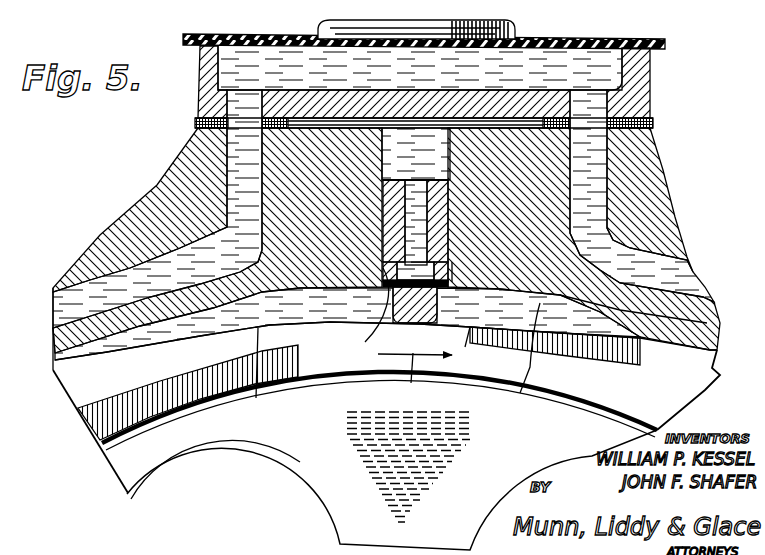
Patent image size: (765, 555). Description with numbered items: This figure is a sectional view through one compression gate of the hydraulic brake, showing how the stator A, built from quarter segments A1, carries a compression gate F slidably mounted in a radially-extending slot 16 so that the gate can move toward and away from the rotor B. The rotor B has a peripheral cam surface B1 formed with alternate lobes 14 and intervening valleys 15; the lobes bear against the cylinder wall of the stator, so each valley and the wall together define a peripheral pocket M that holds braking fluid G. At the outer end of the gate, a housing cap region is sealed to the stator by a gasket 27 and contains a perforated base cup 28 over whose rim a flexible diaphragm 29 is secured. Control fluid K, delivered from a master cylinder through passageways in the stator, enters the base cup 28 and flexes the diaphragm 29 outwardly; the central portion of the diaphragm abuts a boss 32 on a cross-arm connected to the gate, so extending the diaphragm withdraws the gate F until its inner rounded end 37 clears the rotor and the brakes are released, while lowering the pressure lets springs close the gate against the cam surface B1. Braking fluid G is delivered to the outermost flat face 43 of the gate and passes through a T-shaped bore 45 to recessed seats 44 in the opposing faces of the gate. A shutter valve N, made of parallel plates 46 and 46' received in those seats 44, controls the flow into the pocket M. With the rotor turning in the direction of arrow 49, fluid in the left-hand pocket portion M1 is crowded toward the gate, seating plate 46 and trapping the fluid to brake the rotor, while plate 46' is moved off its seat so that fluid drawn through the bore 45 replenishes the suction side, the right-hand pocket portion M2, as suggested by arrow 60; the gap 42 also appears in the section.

The flexible diaphragm 29 is at (668, 42).
The boss 32 is at (324, 30).
The control fluid K is at (214, 75).
The quarter segment A1 is at (186, 156).
The perforated base cup 28 is at (642, 103).
The gasket 27 is at (652, 127).
The gap 42 is at (440, 133).
The stator A is at (140, 187).
The pocket M is at (132, 232).
The radially-extending slot 16 is at (416, 154).
The T-shaped bore 45 is at (386, 214).
The outermost flat face 43 is at (388, 182).
The compression gate F is at (438, 230).
The recessed seat 44 is at (390, 252).
The parallel plate 46 is at (391, 272).
The parallel plate 46' is at (482, 272).
The arrow 60 is at (440, 296).
The shutter valve N is at (359, 314).
The braking fluid G is at (456, 174).
The inner rounded end 37 is at (415, 345).
The valley 15 is at (478, 344).
The arrow 49 is at (379, 401).
The left-hand pocket portion M1 is at (188, 384).
The right-hand pocket portion M2 is at (555, 361).
The lobe 14 is at (93, 393).
The cam surface B1 is at (73, 372).
The rotor B is at (300, 490).